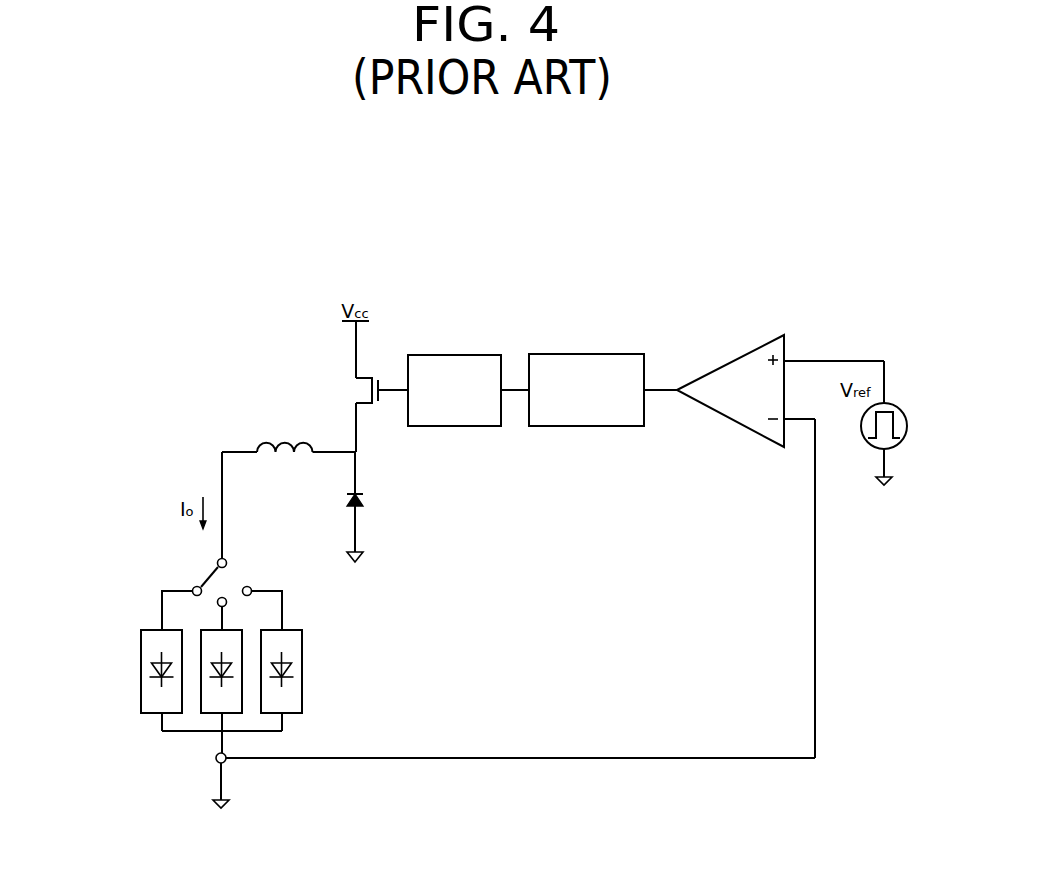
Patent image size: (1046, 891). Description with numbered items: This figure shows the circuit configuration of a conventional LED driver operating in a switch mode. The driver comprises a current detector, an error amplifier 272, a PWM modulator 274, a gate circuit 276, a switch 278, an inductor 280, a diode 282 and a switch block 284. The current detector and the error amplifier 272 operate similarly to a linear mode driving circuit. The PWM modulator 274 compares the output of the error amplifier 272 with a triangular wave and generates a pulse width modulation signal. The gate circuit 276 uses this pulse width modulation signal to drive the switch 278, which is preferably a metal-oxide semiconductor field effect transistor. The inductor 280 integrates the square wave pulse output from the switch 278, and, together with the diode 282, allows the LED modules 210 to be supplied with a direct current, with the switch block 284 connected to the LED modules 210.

The LED modules 210 is at (139, 673).
The error amplifier 272 is at (740, 356).
The PWM modulator 274 is at (583, 354).
The gate circuit 276 is at (455, 355).
The switch 278 is at (356, 378).
The inductor 280 is at (260, 442).
The diode 282 is at (364, 497).
The switch block 284 is at (237, 577).